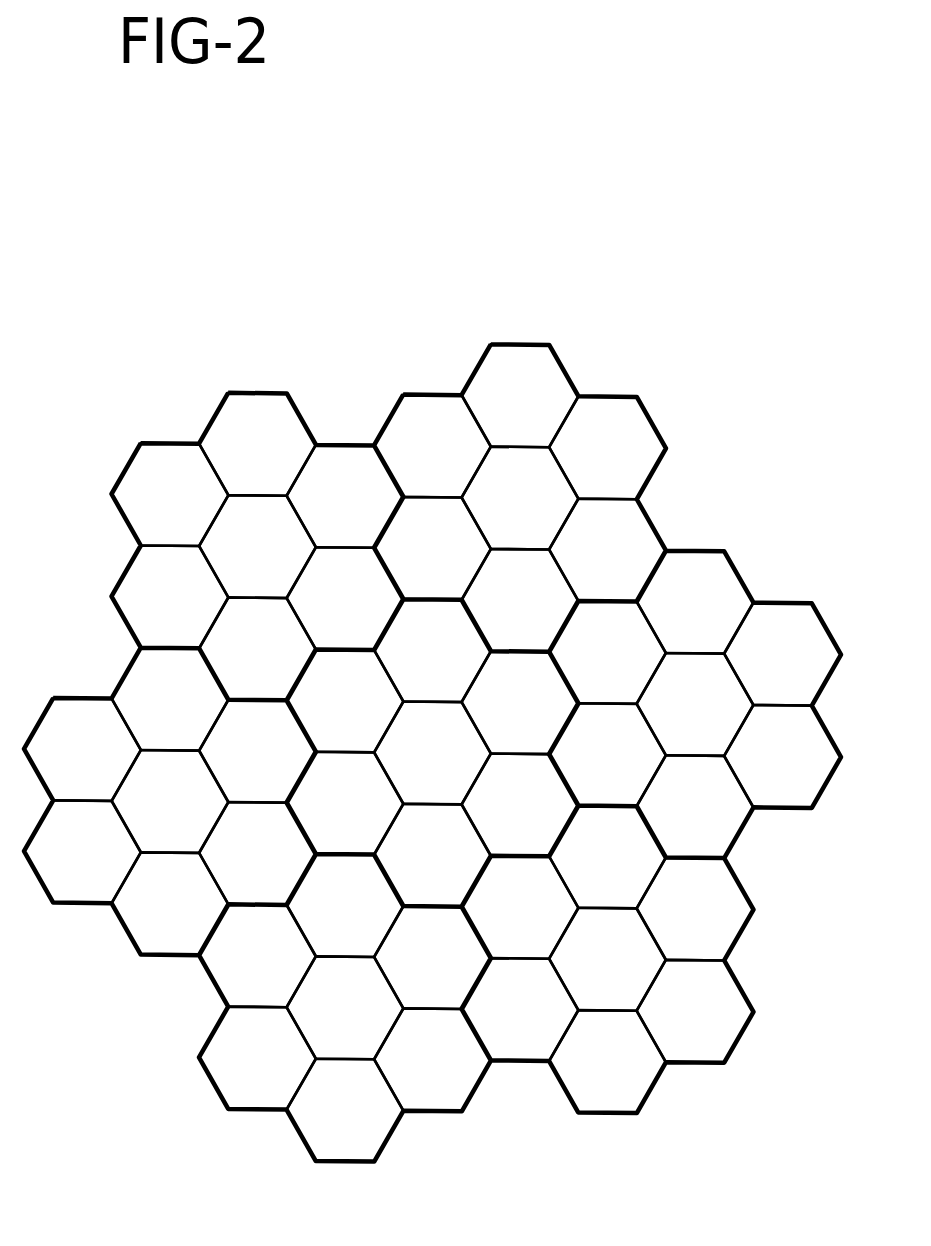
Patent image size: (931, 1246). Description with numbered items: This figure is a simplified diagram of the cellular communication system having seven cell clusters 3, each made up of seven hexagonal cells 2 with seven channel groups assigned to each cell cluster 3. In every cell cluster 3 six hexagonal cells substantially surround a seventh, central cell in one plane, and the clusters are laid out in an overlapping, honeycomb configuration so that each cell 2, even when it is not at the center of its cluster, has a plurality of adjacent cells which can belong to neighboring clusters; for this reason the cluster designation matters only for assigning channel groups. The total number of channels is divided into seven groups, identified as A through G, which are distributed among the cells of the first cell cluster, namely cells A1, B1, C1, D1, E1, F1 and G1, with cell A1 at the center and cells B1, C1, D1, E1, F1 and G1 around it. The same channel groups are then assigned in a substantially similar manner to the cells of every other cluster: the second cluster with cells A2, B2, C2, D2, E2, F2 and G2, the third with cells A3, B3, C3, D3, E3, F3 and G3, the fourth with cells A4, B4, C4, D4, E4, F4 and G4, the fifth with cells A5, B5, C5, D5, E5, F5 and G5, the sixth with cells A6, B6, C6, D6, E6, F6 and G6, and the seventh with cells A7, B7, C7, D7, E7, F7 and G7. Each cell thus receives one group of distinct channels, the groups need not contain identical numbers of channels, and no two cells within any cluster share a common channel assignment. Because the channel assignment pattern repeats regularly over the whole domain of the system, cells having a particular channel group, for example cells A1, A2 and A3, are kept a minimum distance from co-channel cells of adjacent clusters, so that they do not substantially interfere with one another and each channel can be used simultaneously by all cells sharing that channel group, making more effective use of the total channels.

The cell 2 is at (432, 753).
The cell cluster 3 is at (290, 369).
The cell A of first cell cluster A1 is at (432, 752).
The cell B of first cell cluster B1 is at (432, 650).
The cell C of first cell cluster C1 is at (520, 702).
The cell D of first cell cluster D1 is at (520, 804).
The cell E of first cell cluster E1 is at (432, 854).
The cell F of first cell cluster F1 is at (345, 802).
The cell G of first cell cluster G1 is at (345, 700).
The cell A of second cell cluster A2 is at (520, 497).
The cell B of second cell cluster B2 is at (520, 395).
The cell C of second cell cluster C2 is at (607, 447).
The cell D of second cell cluster D2 is at (607, 549).
The cell E of second cell cluster E2 is at (520, 600).
The cell F of second cell cluster F2 is at (432, 548).
The cell G of second cell cluster G2 is at (432, 445).
The cell A of third cell cluster A3 is at (695, 704).
The cell B of third cell cluster B3 is at (695, 601).
The cell C of third cell cluster C3 is at (782, 653).
The cell D of third cell cluster D3 is at (782, 756).
The cell E of third cell cluster E3 is at (695, 806).
The cell F of third cell cluster F3 is at (607, 754).
The cell G of third cell cluster G3 is at (607, 652).
The cell A of fourth cell cluster A4 is at (607, 959).
The cell B of fourth cell cluster B4 is at (607, 856).
The cell C of fourth cell cluster C4 is at (695, 908).
The cell D of fourth cell cluster D4 is at (695, 1011).
The cell E of fourth cell cluster E4 is at (607, 1061).
The cell F of fourth cell cluster F4 is at (520, 1009).
The cell G of fourth cell cluster G4 is at (520, 907).
The cell A of fifth cell cluster A5 is at (345, 1007).
The cell B of fifth cell cluster B5 is at (345, 905).
The cell C of fifth cell cluster C5 is at (432, 957).
The cell D of fifth cell cluster D5 is at (432, 1059).
The cell E of fifth cell cluster E5 is at (345, 1109).
The cell F of fifth cell cluster F5 is at (257, 1057).
The cell G of fifth cell cluster G5 is at (257, 955).
The cell A of sixth cell cluster A6 is at (170, 801).
The cell B of sixth cell cluster B6 is at (170, 698).
The cell C of sixth cell cluster C6 is at (257, 751).
The cell D of sixth cell cluster D6 is at (257, 853).
The cell E of sixth cell cluster E6 is at (170, 903).
The cell F of sixth cell cluster F6 is at (82, 851).
The cell G of sixth cell cluster G6 is at (82, 749).
The cell A of seventh cell cluster A7 is at (257, 546).
The cell B of seventh cell cluster B7 is at (257, 444).
The cell C of seventh cell cluster C7 is at (345, 496).
The cell D of seventh cell cluster D7 is at (345, 598).
The cell E of seventh cell cluster E7 is at (257, 648).
The cell F of seventh cell cluster F7 is at (170, 596).
The cell G of seventh cell cluster G7 is at (170, 494).